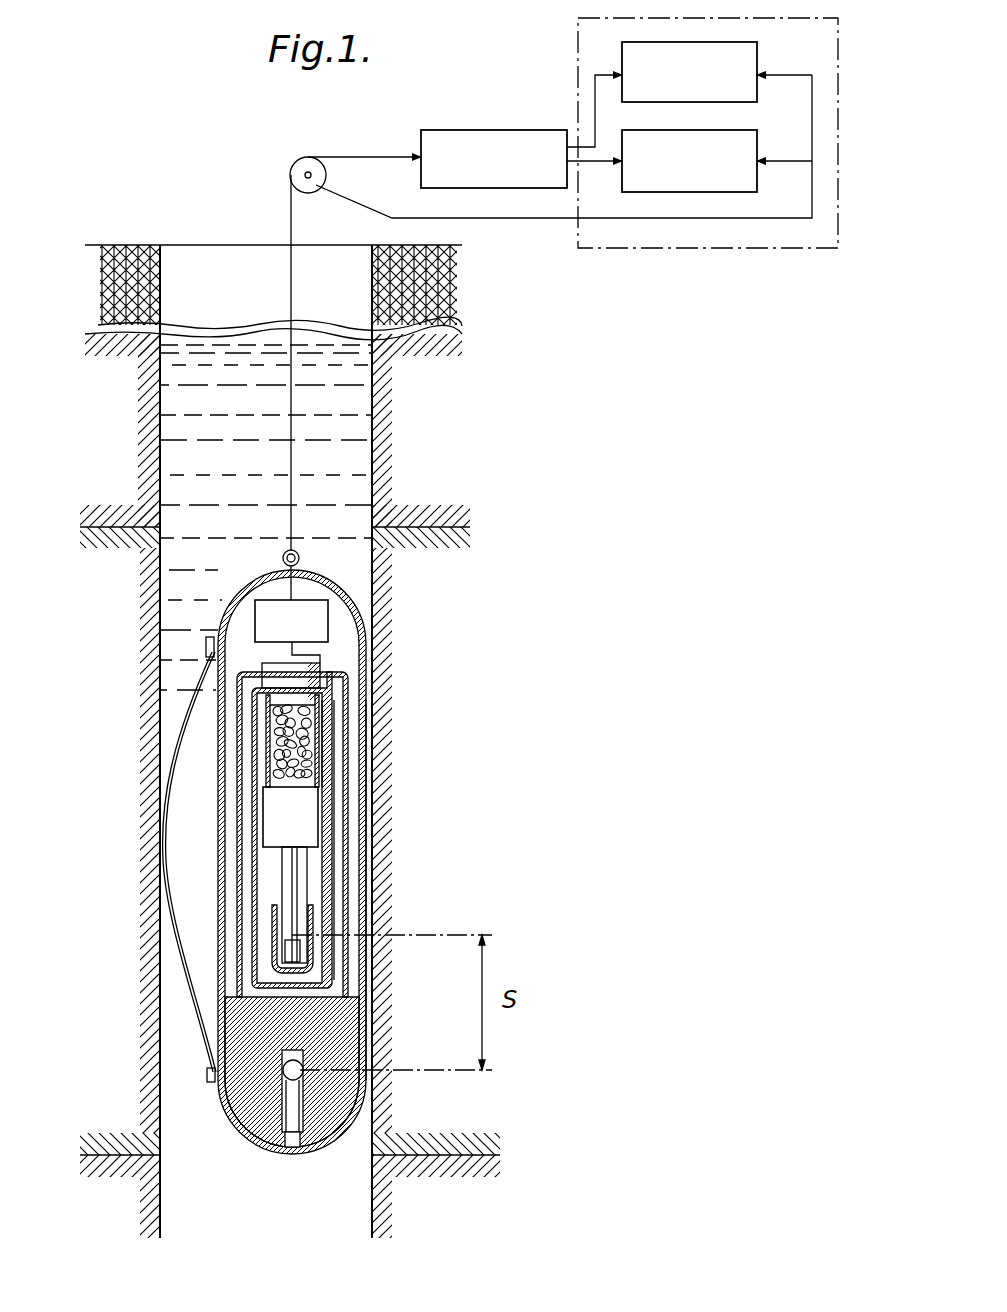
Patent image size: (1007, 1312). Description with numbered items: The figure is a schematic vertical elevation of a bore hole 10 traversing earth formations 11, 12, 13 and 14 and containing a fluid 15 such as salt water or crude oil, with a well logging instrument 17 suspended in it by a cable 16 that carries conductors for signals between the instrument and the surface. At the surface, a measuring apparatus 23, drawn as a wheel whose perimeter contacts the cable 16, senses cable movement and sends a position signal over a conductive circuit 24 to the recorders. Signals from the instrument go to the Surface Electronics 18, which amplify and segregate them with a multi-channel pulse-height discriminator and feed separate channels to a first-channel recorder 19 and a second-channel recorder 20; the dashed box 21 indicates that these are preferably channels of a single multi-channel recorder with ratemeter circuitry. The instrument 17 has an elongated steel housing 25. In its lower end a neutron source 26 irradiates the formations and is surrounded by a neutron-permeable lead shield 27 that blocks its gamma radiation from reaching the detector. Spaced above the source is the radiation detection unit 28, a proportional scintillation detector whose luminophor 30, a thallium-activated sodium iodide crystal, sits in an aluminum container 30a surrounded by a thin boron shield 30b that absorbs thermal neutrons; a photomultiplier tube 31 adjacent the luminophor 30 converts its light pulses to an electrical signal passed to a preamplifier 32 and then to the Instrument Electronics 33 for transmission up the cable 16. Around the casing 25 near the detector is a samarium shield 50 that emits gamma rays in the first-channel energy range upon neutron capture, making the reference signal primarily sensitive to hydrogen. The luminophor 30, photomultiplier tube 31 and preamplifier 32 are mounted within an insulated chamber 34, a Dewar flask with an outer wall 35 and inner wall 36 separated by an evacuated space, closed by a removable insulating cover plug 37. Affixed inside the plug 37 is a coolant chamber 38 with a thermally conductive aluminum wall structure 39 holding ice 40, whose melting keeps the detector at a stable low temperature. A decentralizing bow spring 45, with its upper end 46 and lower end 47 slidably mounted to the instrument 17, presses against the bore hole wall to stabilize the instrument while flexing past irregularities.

The bore hole 10 is at (160, 260).
The earth formation 11 is at (118, 306).
The earth formation 12 is at (118, 451).
The earth formation 13 is at (116, 792).
The earth formation 14 is at (114, 1214).
The fluid 15 is at (260, 472).
The cable 16 is at (291, 206).
The well logging instrument 17 is at (316, 832).
The Surface Electronics 18 is at (470, 128).
The Channel 1 recorder 19 is at (757, 56).
The Channel 2 recorder 20 is at (745, 132).
The dashed box 21 is at (578, 36).
The measuring apparatus 23 is at (323, 176).
The conductive circuit 24 is at (360, 200).
The housing 25 is at (354, 590).
The neutron source 26 is at (302, 1066).
The shield 27 is at (336, 1020).
The radiation detection unit 28 is at (350, 674).
The luminophor 30 is at (313, 938).
The container 30a is at (300, 954).
The boron shield 30b is at (314, 922).
The photomultiplier tube 31 is at (281, 858).
The preamplifier 32 is at (263, 797).
The Instrument Electronics 33 is at (329, 622).
The insulated chamber 34 is at (318, 868).
The outer wall 35 is at (334, 801).
The inner wall 36 is at (334, 828).
The insulating cover plug 37 is at (291, 681).
The coolant chamber 38 is at (336, 737).
The wall structure 39 is at (321, 773).
The ice 40 is at (320, 714).
The decentralizing bow spring 45 is at (190, 753).
The upper end 46 is at (211, 636).
The lower end 47 is at (212, 1083).
The shield 50 is at (370, 882).